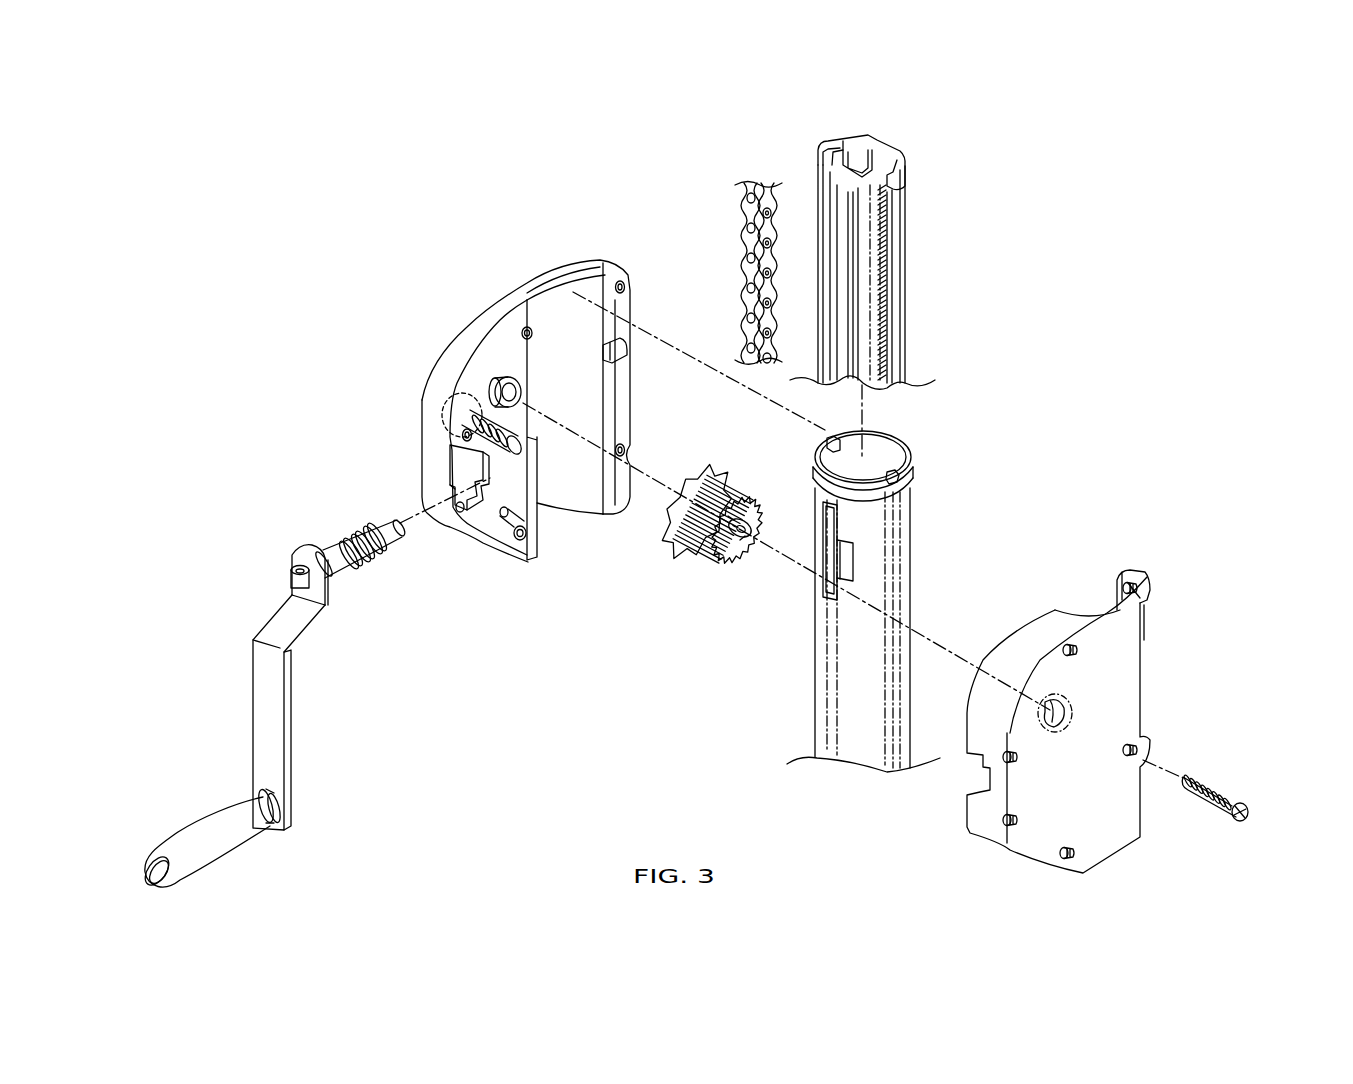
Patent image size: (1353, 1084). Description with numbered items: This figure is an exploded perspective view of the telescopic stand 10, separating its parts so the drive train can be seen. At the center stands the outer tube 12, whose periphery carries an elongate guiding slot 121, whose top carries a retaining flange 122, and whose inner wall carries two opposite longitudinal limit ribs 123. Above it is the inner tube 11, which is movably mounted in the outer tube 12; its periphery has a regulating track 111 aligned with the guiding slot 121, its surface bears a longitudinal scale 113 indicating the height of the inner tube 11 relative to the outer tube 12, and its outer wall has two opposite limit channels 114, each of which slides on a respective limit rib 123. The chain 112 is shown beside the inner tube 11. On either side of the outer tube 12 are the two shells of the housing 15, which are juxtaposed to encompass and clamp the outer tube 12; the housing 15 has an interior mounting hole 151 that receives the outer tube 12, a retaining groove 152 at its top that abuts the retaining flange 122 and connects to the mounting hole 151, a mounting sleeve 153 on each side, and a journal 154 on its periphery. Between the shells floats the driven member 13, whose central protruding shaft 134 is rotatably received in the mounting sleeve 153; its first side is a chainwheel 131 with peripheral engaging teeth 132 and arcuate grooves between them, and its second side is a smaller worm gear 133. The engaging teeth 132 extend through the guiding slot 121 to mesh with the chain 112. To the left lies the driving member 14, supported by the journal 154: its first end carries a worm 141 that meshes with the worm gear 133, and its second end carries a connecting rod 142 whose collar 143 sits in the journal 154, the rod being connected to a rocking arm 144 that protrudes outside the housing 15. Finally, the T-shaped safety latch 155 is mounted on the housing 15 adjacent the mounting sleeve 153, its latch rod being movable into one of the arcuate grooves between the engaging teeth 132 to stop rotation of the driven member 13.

The telescopic stand 10 is at (1048, 425).
The inner tube 11 is at (882, 262).
The regulating track 111 is at (828, 180).
The chain 112 is at (740, 283).
The scale 113 is at (883, 240).
The limit channels 114 is at (832, 140).
The outer tube 12 is at (868, 583).
The guiding slot 121 is at (830, 563).
The retaining flange 122 is at (913, 488).
The limit ribs 123 is at (838, 440).
The driven member 13 is at (696, 494).
The chainwheel 131 is at (690, 482).
The engaging teeth 132 is at (736, 464).
The worm gear 133 is at (690, 562).
The protruding shaft 134 is at (674, 541).
The driving member 14 is at (296, 682).
The worm 141 is at (352, 522).
The connecting rod 142 is at (295, 570).
The collar 143 is at (320, 545).
The rocking arm 144 is at (272, 722).
The housing 15 is at (503, 275).
The mounting hole 151 is at (557, 300).
The retaining groove 152 is at (630, 303).
The mounting sleeve 153 is at (500, 383).
The journal 154 is at (470, 470).
The safety latch 155 is at (455, 420).